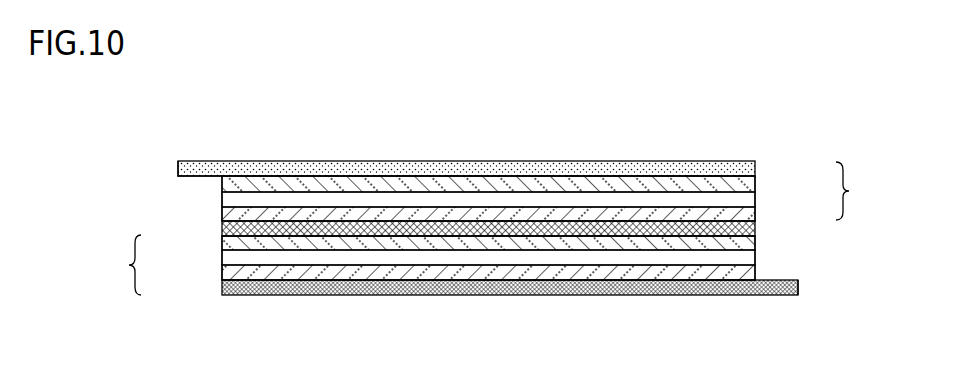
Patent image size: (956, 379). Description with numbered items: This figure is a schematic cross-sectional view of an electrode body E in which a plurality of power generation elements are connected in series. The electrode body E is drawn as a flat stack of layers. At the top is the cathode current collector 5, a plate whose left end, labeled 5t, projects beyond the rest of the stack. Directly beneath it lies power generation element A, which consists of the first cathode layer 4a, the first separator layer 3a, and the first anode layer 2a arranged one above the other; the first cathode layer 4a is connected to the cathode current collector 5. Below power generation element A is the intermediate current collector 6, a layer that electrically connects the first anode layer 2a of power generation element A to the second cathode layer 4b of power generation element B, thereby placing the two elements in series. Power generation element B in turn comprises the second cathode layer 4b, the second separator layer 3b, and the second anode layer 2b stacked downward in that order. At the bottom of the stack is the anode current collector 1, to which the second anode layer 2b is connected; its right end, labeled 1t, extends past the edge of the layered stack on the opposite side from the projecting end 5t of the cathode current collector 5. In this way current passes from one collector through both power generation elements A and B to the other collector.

The electrode body E is at (738, 116).
The cathode current collector 5 is at (487, 167).
The end portion of upper cover layer 5t is at (192, 167).
The power generation element A is at (546, 191).
The first cathode layer 4a is at (750, 180).
The first separator layer 3a is at (746, 201).
The first anode layer 2a is at (748, 215).
The intermediate current collector 6 is at (752, 230).
The power generation element B is at (430, 265).
The second cathode layer 4b is at (224, 245).
The second separator layer 3b is at (223, 258).
The second anode layer 2b is at (224, 277).
The anode current collector 1 is at (490, 286).
The end portion of base layer 1t is at (786, 288).